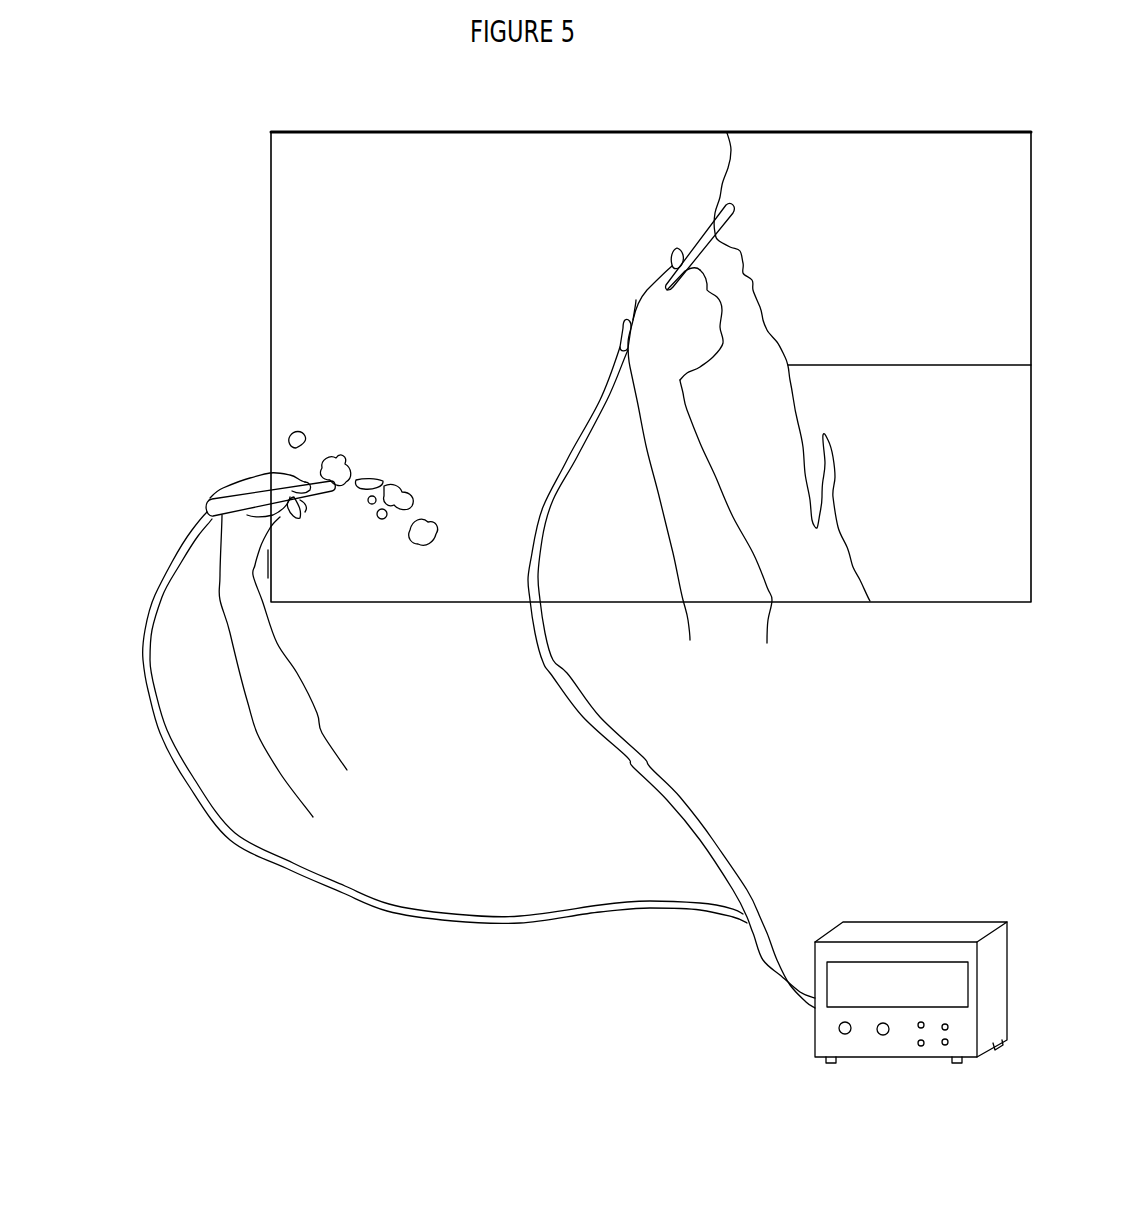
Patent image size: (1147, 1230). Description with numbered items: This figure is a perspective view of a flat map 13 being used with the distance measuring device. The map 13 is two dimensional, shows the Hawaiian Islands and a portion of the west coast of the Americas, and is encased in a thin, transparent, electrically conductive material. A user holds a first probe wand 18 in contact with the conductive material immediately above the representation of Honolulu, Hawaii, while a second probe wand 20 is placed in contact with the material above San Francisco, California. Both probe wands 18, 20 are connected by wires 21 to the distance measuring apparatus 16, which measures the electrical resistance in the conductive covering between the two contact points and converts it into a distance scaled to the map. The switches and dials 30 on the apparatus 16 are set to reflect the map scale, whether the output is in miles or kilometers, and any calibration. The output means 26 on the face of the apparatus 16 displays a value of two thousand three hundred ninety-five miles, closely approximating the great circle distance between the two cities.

The map 13 is at (566, 244).
The second probe wand 20 is at (707, 240).
The first probe wand 18 is at (300, 494).
The wires 21 is at (542, 910).
The distance measuring apparatus 16 is at (894, 932).
The output means 26 is at (933, 975).
The switches and dials 30 is at (848, 1035).